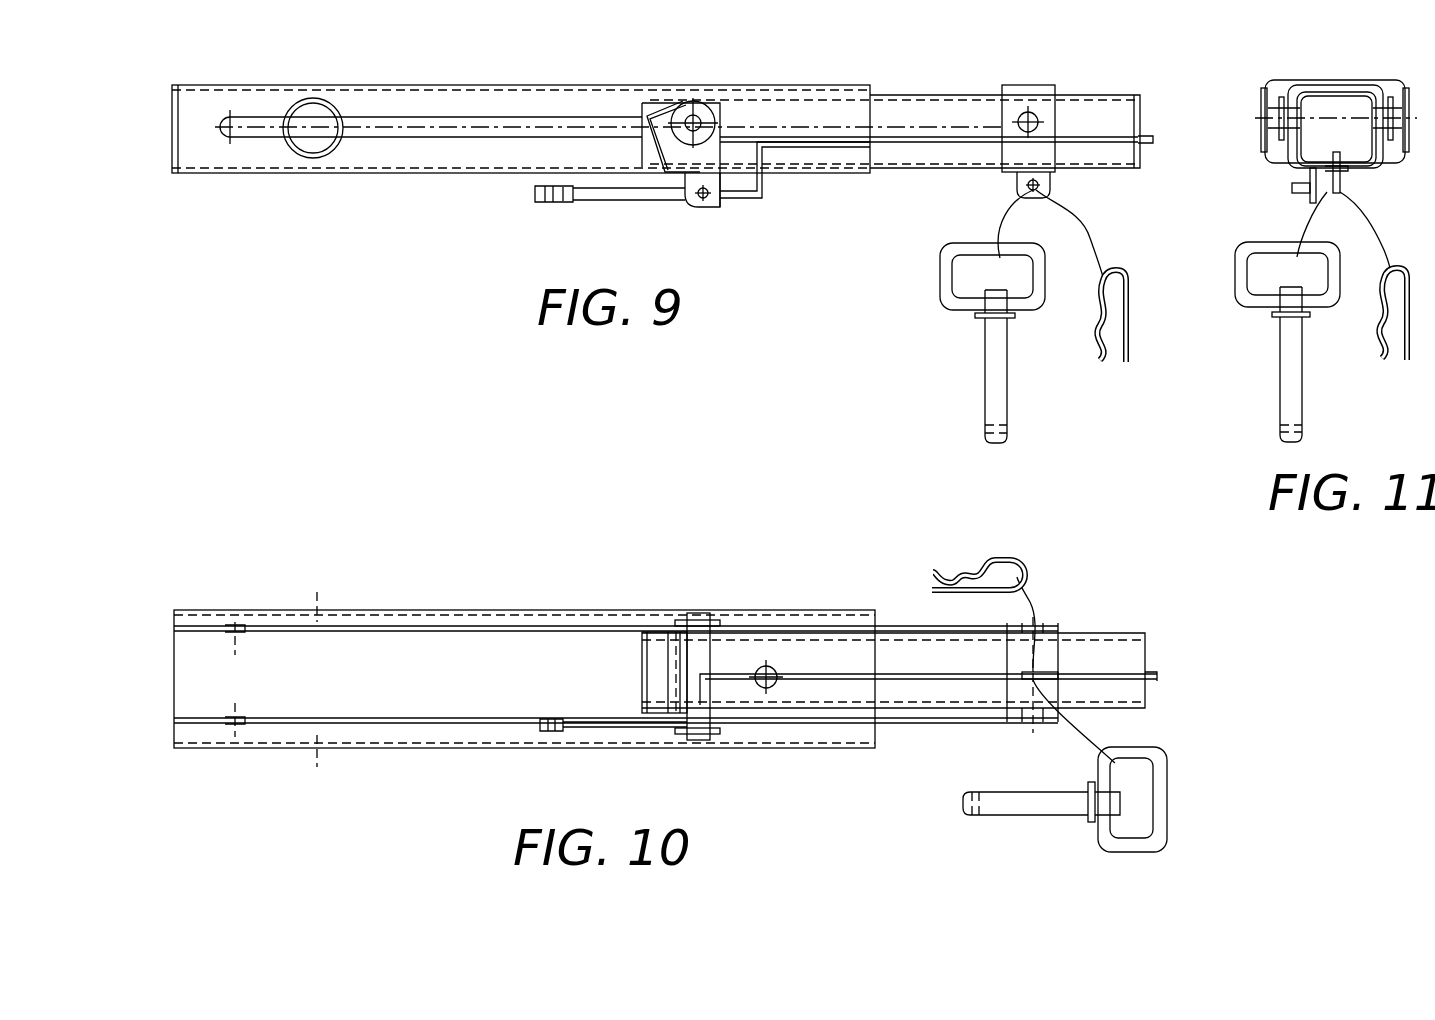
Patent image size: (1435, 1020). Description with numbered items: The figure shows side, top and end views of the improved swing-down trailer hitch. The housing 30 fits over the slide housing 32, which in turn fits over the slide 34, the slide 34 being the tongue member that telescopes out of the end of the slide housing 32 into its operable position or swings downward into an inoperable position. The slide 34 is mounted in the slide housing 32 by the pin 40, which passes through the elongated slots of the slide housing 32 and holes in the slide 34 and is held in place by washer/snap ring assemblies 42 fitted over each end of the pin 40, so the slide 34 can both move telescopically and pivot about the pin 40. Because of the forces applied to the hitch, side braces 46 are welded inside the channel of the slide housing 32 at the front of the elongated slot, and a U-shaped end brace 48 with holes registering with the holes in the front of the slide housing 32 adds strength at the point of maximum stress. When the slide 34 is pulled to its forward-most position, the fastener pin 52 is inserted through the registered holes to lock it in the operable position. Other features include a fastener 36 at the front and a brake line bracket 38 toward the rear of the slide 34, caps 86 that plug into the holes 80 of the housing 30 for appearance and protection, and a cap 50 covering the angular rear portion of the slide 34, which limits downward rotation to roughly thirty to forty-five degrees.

In FIG. 10, the housing 30 is at (345, 622).
In FIG. 9, the slide housing 32 is at (220, 150).
In FIG. 9, the slide 34 is at (743, 110).
In FIG. 9, the fastener 36 is at (1046, 183).
In FIG. 9, the brake line bracket 38 is at (718, 203).
In FIG. 11, the pin 40 is at (1328, 112).
In FIG. 11, the washer/snap ring assemblies 42 is at (1396, 92).
In FIG. 9, the side braces 46 is at (723, 100).
In FIG. 9, the end brace 48 is at (1052, 100).
In FIG. 9, the cap 50 is at (652, 104).
In FIG. 11, the pin 52 is at (1297, 380).
In FIG. 10, the pin 52 is at (1005, 806).
In FIG. 9, the holes 80 is at (312, 102).
In FIG. 9, the caps 86 is at (318, 105).